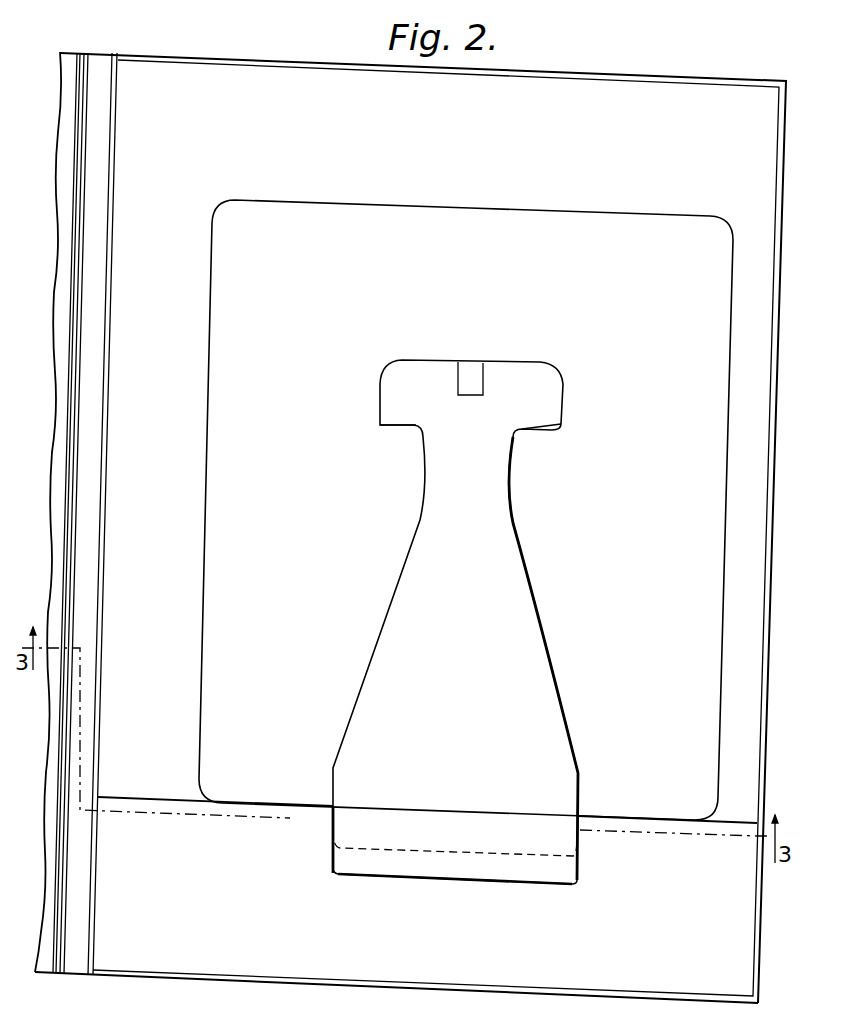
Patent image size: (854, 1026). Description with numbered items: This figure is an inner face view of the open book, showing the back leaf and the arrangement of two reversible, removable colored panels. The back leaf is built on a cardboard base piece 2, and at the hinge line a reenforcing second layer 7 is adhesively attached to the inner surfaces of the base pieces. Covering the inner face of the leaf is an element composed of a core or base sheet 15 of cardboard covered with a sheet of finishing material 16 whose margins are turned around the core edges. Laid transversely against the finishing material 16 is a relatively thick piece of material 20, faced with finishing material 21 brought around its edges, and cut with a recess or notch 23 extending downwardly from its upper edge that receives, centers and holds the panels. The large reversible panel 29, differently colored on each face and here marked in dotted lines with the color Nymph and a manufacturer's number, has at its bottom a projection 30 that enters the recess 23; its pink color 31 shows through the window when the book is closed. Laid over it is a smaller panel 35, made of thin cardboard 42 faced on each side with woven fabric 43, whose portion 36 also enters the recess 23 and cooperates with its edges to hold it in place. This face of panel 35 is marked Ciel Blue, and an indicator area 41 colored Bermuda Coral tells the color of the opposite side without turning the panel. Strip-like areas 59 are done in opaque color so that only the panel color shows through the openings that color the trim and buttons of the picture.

The base piece for the back leaf 2 is at (572, 110).
The reenforcing second layer 7 is at (82, 552).
The core or base sheet 15 is at (175, 457).
The sheet of finishing material 16 is at (170, 400).
The relatively thick piece of material 20 is at (212, 832).
The finishing material 21 is at (212, 940).
The recess or notch 23 is at (333, 849).
The large panel 29 is at (490, 204).
The projection 30 is at (467, 843).
The pink color of the panel 31 is at (575, 205).
The panel 35 is at (515, 617).
The portion 36 is at (513, 873).
The indicator area 41 is at (465, 375).
The thin cardboard 42 is at (523, 643).
The woven fabric 43 is at (525, 670).
The strip-like areas 59 is at (395, 427).